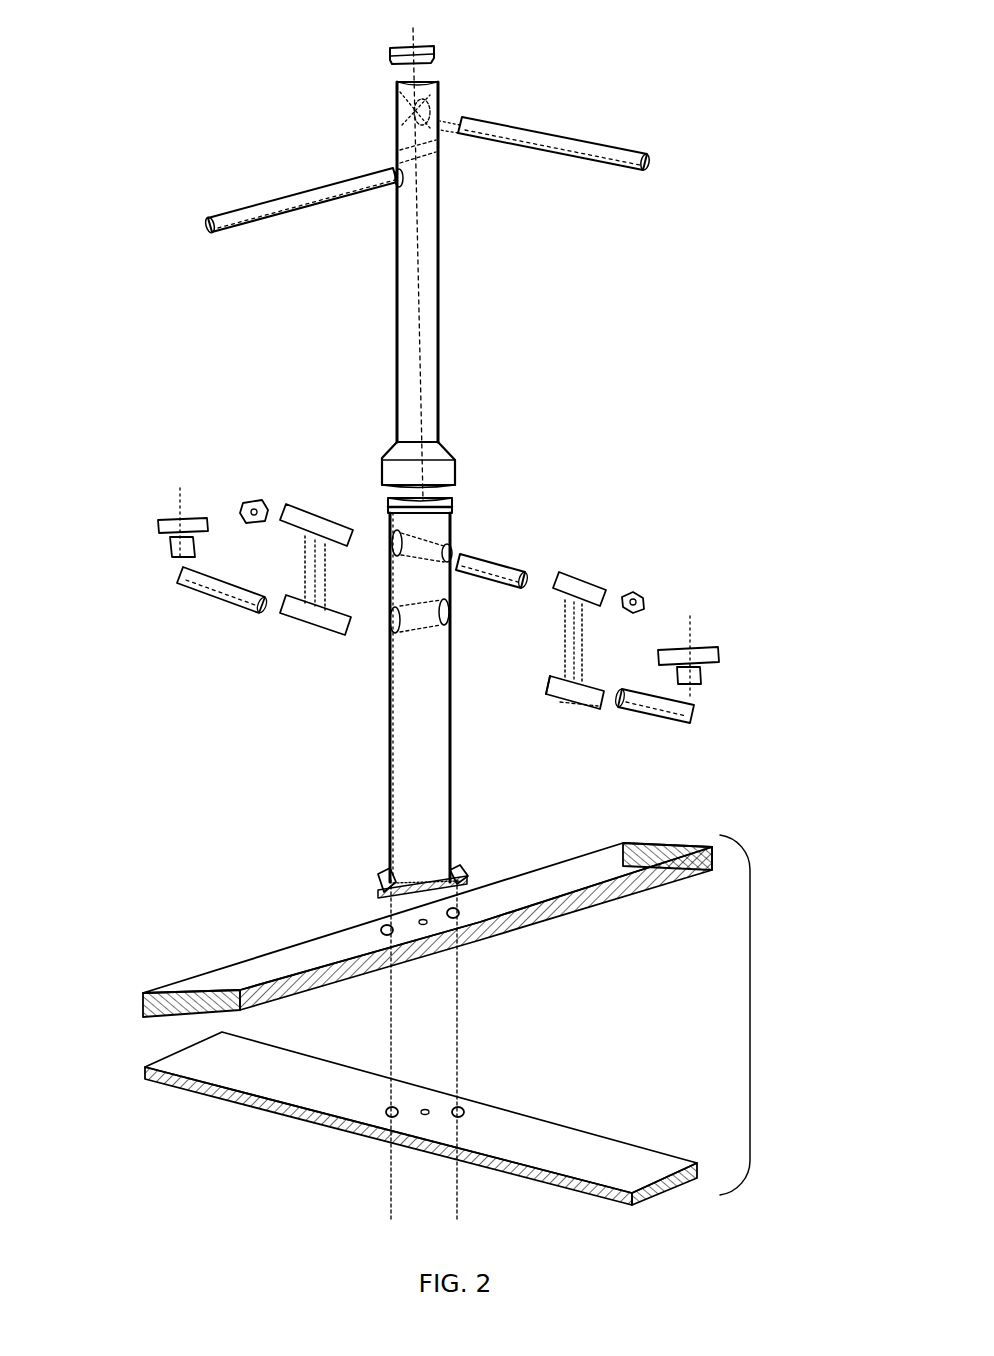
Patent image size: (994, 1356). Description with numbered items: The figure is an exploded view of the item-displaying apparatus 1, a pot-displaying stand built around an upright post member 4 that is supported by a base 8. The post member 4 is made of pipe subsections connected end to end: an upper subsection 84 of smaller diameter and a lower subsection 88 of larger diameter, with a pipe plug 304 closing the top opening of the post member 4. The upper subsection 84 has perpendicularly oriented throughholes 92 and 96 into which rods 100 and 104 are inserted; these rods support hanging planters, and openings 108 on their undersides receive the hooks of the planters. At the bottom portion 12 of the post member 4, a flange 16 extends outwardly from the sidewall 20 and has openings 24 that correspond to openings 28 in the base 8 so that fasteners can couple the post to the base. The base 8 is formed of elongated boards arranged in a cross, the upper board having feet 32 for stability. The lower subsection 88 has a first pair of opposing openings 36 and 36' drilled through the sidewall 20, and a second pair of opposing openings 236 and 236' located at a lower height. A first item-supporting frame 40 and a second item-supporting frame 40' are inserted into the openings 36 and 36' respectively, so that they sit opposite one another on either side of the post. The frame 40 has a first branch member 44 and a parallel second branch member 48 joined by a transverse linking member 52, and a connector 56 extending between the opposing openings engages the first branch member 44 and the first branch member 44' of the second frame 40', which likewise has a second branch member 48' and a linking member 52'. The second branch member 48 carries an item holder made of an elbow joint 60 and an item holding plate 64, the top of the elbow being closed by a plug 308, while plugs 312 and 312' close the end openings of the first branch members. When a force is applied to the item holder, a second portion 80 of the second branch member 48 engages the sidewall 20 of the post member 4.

The item-displaying apparatus 1 is at (200, 68).
The pipe plug 304 is at (428, 45).
The throughhole 92 is at (435, 108).
The rod 100 is at (497, 128).
The rod 104 is at (284, 202).
The opening 108 is at (225, 240).
The throughhole 96 is at (400, 178).
The upper subsection 84 is at (425, 298).
The post member 4 is at (486, 460).
The sidewall 20 is at (449, 738).
The lower subsection 88 is at (410, 800).
The opening 36' is at (388, 500).
The opening 36 is at (477, 523).
The opening 236 is at (461, 612).
The opening 236' is at (344, 647).
The connector 56 is at (498, 562).
The bottom portion 12 is at (453, 862).
The flange 16 is at (391, 870).
The opening 24 is at (464, 880).
The base 8 is at (752, 1015).
The feet 32 is at (666, 878).
The opening 28 is at (387, 935).
The item-supporting frame 40' is at (419, 598).
The plug 312' is at (240, 481).
The first branch member 44' is at (296, 542).
The linking member 52' is at (277, 573).
The plug 308 is at (175, 548).
The item holding plate 64 is at (700, 652).
The second branch member 48' is at (243, 618).
The item-supporting frame 40 is at (644, 638).
The first branch member 44 is at (578, 638).
The linking member 52 is at (600, 642).
The second portion 80 is at (550, 692).
The second branch member 48 is at (579, 729).
The plug 312 is at (648, 573).
The elbow joint 60 is at (690, 712).